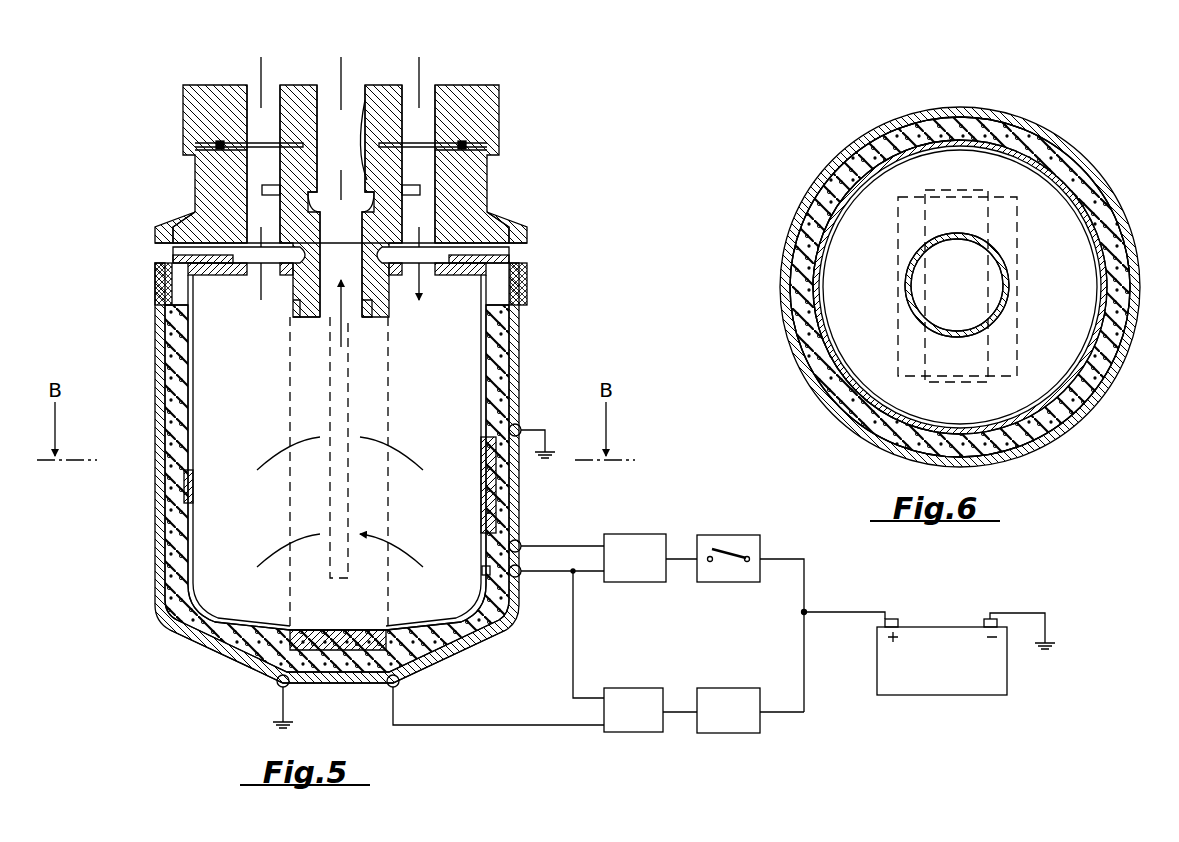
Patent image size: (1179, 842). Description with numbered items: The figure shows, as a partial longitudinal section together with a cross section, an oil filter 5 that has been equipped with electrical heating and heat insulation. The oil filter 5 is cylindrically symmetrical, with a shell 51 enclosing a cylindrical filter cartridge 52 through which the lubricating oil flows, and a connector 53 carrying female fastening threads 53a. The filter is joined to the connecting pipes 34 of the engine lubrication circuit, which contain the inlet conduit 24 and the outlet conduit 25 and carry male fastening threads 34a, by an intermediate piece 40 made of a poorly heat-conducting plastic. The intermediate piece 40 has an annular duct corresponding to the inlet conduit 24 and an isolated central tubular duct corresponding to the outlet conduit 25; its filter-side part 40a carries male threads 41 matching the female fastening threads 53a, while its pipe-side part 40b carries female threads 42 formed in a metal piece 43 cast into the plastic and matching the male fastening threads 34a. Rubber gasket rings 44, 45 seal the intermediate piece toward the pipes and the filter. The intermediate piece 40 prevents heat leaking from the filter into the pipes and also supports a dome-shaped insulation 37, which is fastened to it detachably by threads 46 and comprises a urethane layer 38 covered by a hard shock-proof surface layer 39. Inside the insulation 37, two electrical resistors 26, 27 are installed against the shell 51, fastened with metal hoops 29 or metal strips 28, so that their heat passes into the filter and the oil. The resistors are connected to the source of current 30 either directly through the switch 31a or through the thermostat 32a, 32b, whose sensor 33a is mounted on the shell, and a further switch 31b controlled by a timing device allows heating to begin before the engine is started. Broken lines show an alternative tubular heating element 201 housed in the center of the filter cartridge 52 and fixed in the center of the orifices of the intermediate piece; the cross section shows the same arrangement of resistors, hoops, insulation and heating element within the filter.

In FIG. 5, the oil filter 5 is at (183, 378).
In FIG. 6, the oil filter 5 is at (1004, 135).
In FIG. 5, the inlet conduit 24 is at (250, 60).
In FIG. 5, the outlet conduit 25 is at (329, 100).
In FIG. 5, the electrical resistor 26 is at (345, 650).
In FIG. 6, the electrical resistor 26 is at (978, 355).
In FIG. 5, the electrical resistor 27 is at (482, 524).
In FIG. 6, the electrical resistor 27 is at (1118, 235).
In FIG. 5, the metal strip 28 is at (378, 625).
In FIG. 6, the metal strip 28 is at (905, 231).
In FIG. 5, the metal hoop 29 is at (195, 483).
In FIG. 6, the metal hoop 29 is at (872, 398).
In FIG. 5, the source of current 30 is at (940, 668).
In FIG. 5, the switch 31a is at (729, 565).
In FIG. 5, the switch 31b is at (729, 705).
In FIG. 5, the thermostat 32a is at (636, 565).
In FIG. 5, the thermostat 32b is at (637, 705).
In FIG. 5, the sensor 33a is at (482, 571).
In FIG. 5, the connecting pipes 34 is at (205, 95).
In FIG. 5, the male fastening threads 34a is at (366, 98).
In FIG. 5, the insulation 37 is at (150, 480).
In FIG. 6, the insulation 37 is at (1072, 132).
In FIG. 5, the urethane layer 38 is at (195, 625).
In FIG. 6, the urethane layer 38 is at (830, 188).
In FIG. 5, the insulating layer 39 is at (512, 385).
In FIG. 6, the insulating layer 39 is at (942, 112).
In FIG. 5, the intermediate piece 40 is at (520, 225).
In FIG. 5, the filter-side part 40a is at (370, 300).
In FIG. 5, the connecting-pipe-side part 40b is at (215, 168).
In FIG. 5, the male threads 41 is at (355, 325).
In FIG. 5, the female threads 42 is at (285, 145).
In FIG. 5, the metal piece 43 is at (258, 190).
In FIG. 5, the rubber gasket ring 44 is at (210, 145).
In FIG. 5, the rubber gasket ring 45 is at (200, 256).
In FIG. 5, the threads 46 is at (160, 280).
In FIG. 5, the shell 51 is at (175, 545).
In FIG. 6, the shell 51 is at (875, 175).
In FIG. 5, the filter cartridge 52 is at (288, 408).
In FIG. 6, the filter cartridge 52 is at (985, 243).
In FIG. 5, the connector 53 is at (290, 305).
In FIG. 5, the female fastening threads 53a is at (300, 318).
In FIG. 5, the tubular heating element 201 is at (330, 527).